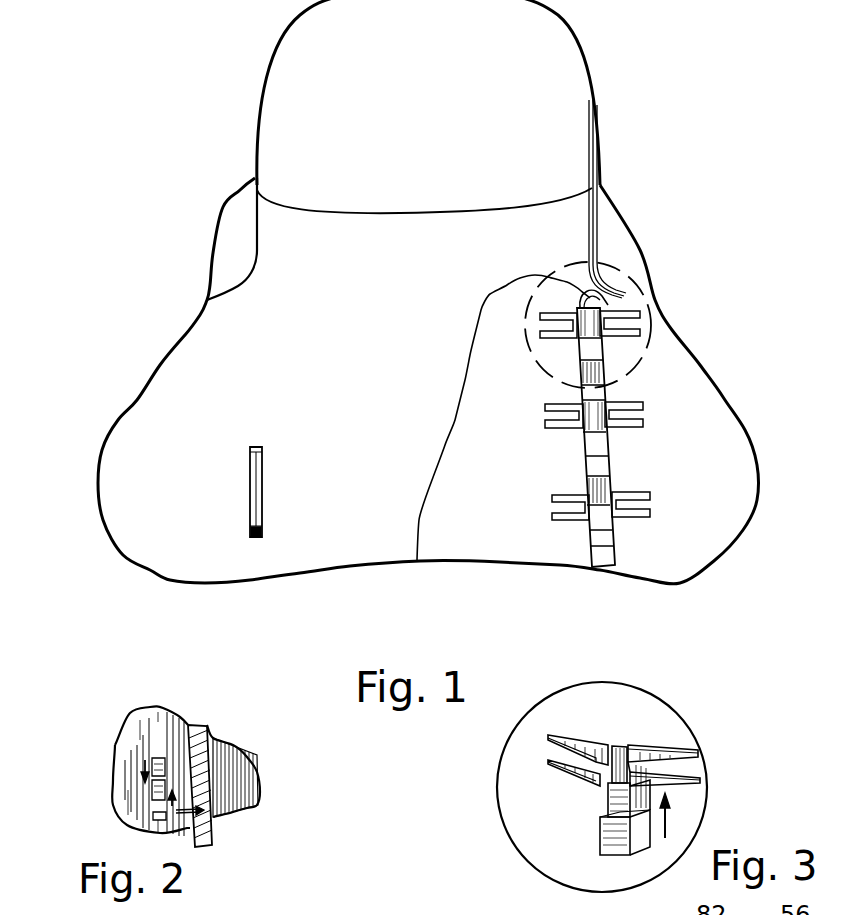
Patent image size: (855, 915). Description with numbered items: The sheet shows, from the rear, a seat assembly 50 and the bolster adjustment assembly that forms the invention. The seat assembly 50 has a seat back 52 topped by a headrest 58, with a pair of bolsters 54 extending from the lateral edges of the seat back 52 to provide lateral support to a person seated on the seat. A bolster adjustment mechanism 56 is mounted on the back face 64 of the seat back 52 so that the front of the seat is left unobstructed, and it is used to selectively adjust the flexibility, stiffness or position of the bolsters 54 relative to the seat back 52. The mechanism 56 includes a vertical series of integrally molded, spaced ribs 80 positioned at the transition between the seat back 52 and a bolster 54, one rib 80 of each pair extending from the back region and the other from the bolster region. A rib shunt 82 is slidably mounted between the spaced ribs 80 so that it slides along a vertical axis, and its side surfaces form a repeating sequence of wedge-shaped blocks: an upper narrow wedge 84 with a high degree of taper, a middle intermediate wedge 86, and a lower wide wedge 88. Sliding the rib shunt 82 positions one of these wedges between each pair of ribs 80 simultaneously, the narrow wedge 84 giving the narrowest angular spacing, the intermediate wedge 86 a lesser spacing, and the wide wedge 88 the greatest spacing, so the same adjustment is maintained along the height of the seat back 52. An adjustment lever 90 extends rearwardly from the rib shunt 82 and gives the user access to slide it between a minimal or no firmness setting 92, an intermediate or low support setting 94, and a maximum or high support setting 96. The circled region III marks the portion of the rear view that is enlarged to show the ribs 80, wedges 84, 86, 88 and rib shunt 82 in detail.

In FIG. 1, the seat assembly 50 is at (176, 222).
In FIG. 1, the seat back 52 is at (547, 245).
In FIG. 2, the seat back 52 is at (227, 815).
In FIG. 1, the bolsters 54 is at (187, 434).
In FIG. 1, the bolster adjustment mechanism 56 is at (655, 500).
In FIG. 3, the bolster adjustment mechanism 56 is at (653, 737).
In FIG. 1, the headrest 58 is at (535, 62).
In FIG. 1, the back face 64 is at (380, 311).
In FIG. 1, the ribs 80 is at (558, 340).
In FIG. 3, the ribs 80 is at (568, 735).
In FIG. 1, the rib shunt 82 is at (589, 568).
In FIG. 3, the rib shunt 82 is at (615, 857).
In FIG. 1, the upper narrow wedge 84 is at (598, 294).
In FIG. 3, the upper narrow wedge 84 is at (616, 746).
In FIG. 1, the intermediate wedge 86 is at (600, 340).
In FIG. 3, the intermediate wedge 86 is at (612, 798).
In FIG. 1, the wide wedge 88 is at (600, 385).
In FIG. 3, the wide wedge 88 is at (643, 843).
In FIG. 1, the adjustment lever 90 is at (250, 470).
In FIG. 2, the adjustment lever 90 is at (160, 758).
In FIG. 2, the minimal firmness setting 92 is at (168, 766).
In FIG. 2, the intermediate support setting 94 is at (172, 785).
In FIG. 2, the maximum support setting 96 is at (178, 810).
In FIG. 1, the region III is at (768, 294).